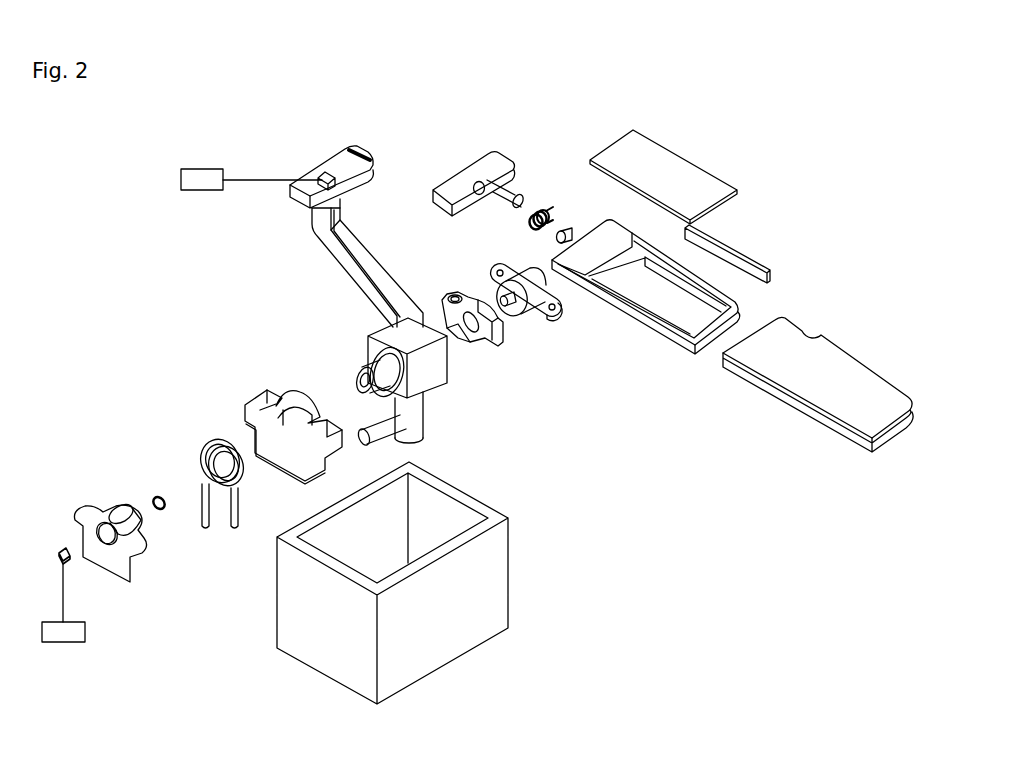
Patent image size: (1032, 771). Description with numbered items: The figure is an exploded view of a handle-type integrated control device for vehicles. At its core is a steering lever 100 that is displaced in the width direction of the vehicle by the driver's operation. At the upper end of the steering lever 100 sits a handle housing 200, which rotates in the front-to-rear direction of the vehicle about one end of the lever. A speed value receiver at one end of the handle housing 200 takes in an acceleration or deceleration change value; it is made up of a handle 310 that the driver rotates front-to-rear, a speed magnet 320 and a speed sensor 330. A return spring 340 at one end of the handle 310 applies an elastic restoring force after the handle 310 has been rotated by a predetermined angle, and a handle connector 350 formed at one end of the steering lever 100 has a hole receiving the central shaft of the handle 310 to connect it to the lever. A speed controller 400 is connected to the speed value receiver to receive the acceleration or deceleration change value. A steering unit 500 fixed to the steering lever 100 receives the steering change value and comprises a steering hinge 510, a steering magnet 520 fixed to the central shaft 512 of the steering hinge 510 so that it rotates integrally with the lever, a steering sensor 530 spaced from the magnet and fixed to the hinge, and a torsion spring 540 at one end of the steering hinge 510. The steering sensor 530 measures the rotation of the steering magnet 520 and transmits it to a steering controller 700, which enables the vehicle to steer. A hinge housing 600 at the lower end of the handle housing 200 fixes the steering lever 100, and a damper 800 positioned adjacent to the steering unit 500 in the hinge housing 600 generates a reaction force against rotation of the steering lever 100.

The steering lever 100 is at (388, 285).
The handle housing 200 is at (824, 358).
The handle 310 is at (645, 330).
The speed magnet 320 is at (556, 236).
The speed sensor 330 is at (327, 172).
The return spring 340 is at (540, 207).
The handle connector 350 is at (478, 163).
The speed controller 400 is at (197, 168).
The steering unit 500 is at (346, 287).
The steering hinge 510 is at (443, 373).
The central shaft 512 is at (390, 378).
The steering magnet 520 is at (152, 498).
The steering sensor 530 is at (62, 548).
The torsion spring 540 is at (207, 528).
The hinge housing 600 is at (492, 598).
The steering controller 700 is at (86, 635).
The damper 800 is at (551, 320).